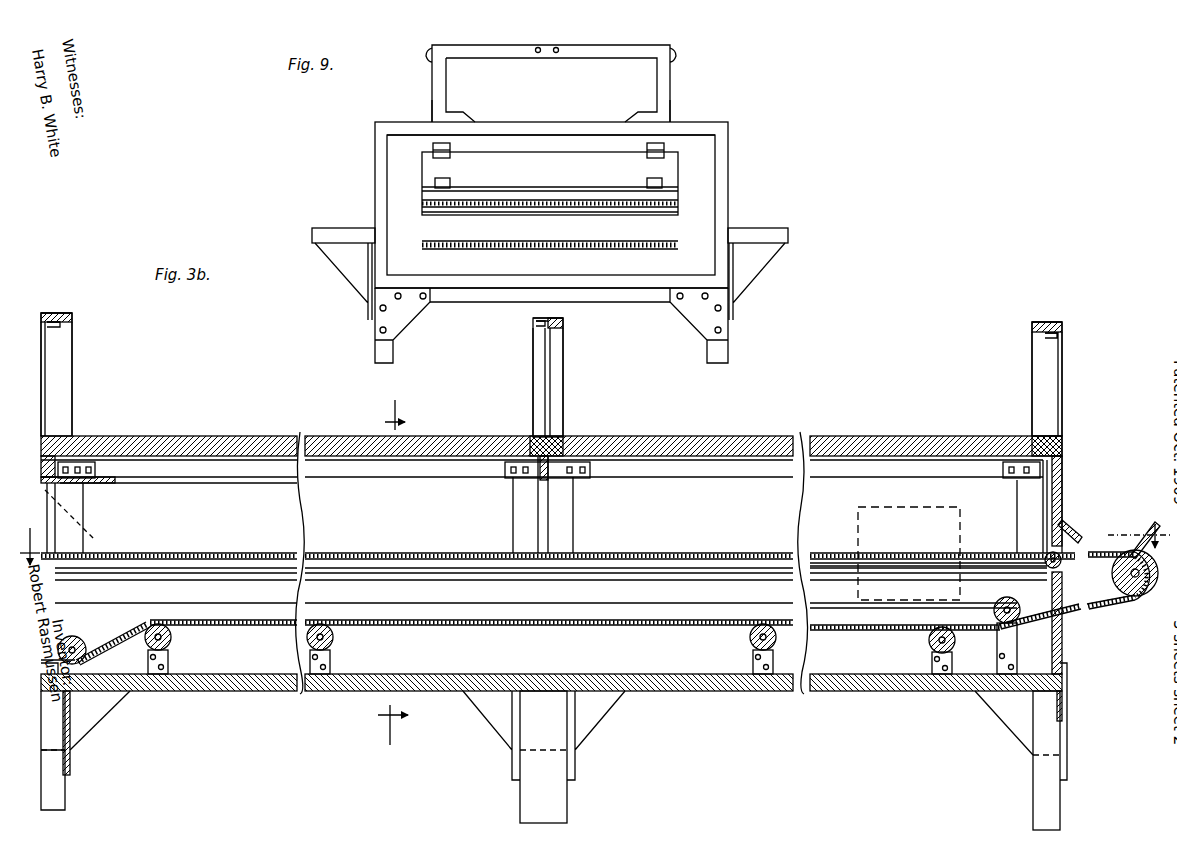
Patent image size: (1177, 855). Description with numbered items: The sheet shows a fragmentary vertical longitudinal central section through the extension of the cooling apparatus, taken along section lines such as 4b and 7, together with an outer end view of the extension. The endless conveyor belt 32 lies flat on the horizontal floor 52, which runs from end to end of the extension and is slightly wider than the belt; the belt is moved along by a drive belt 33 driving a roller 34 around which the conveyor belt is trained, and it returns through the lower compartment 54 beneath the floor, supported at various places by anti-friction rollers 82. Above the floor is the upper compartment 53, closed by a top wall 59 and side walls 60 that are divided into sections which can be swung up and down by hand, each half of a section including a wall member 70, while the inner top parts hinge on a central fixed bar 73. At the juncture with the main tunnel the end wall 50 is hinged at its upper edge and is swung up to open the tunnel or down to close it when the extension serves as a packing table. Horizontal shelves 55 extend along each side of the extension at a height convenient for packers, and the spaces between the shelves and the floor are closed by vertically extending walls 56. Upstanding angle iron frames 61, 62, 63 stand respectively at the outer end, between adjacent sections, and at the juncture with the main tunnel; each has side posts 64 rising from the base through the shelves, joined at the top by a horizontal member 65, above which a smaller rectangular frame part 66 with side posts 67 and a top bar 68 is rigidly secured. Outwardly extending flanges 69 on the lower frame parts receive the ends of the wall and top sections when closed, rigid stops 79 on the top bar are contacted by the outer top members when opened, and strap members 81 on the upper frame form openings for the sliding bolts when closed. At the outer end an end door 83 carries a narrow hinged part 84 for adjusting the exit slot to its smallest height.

In FIG. 3B, the section line indicator 4b is at (586, 544).
In FIG. 3B, the section line indicator 7 is at (393, 571).
In FIG. 9, the conveyor belt 32 is at (538, 243).
In FIG. 3B, the conveyor belt 32 is at (630, 553).
In FIG. 3B, the drive belt 33 is at (1158, 538).
In FIG. 3B, the roller 34 is at (1129, 537).
In FIG. 3B, the end wall 50 is at (44, 490).
In FIG. 3B, the floor 52 is at (648, 566).
In FIG. 3B, the upper compartment 53 is at (409, 509).
In FIG. 3B, the lower compartment 54 is at (497, 608).
In FIG. 9, the shelves 55 is at (332, 228).
In FIG. 3B, the walls 56 is at (551, 585).
In FIG. 3B, the top wall 59 is at (715, 436).
In FIG. 3B, the side walls 60 is at (699, 505).
In FIG. 3B, the angle iron frame 61 is at (1030, 384).
In FIG. 3B, the angle iron frames 62 is at (565, 414).
In FIG. 3B, the angle iron frame 63 is at (74, 392).
In FIG. 9, the side post 64 is at (375, 164).
In FIG. 9, the horizontal member 65 is at (528, 128).
In FIG. 3B, the horizontal member 65 is at (553, 460).
In FIG. 3B, the upper frame part 66 is at (75, 340).
In FIG. 9, the side posts 67 is at (432, 97).
In FIG. 3B, the side posts 67 is at (40, 397).
In FIG. 9, the top bar 68 is at (508, 58).
In FIG. 3B, the top bar 68 is at (55, 313).
In FIG. 3B, the flanges 69 is at (72, 460).
In FIG. 3B, the wall member 70 is at (268, 520).
In FIG. 3B, the central fixed bar 73 is at (248, 436).
In FIG. 9, the stops 79 is at (554, 53).
In FIG. 3B, the stops 79 is at (70, 313).
In FIG. 9, the strap members 81 is at (432, 52).
In FIG. 3B, the anti-friction rollers 82 is at (76, 646).
In FIG. 9, the end door 83 is at (430, 188).
In FIG. 3B, the end door 83 is at (1062, 506).
In FIG. 9, the narrow hinged part 84 is at (428, 202).
In FIG. 3B, the narrow hinged part 84 is at (1074, 530).